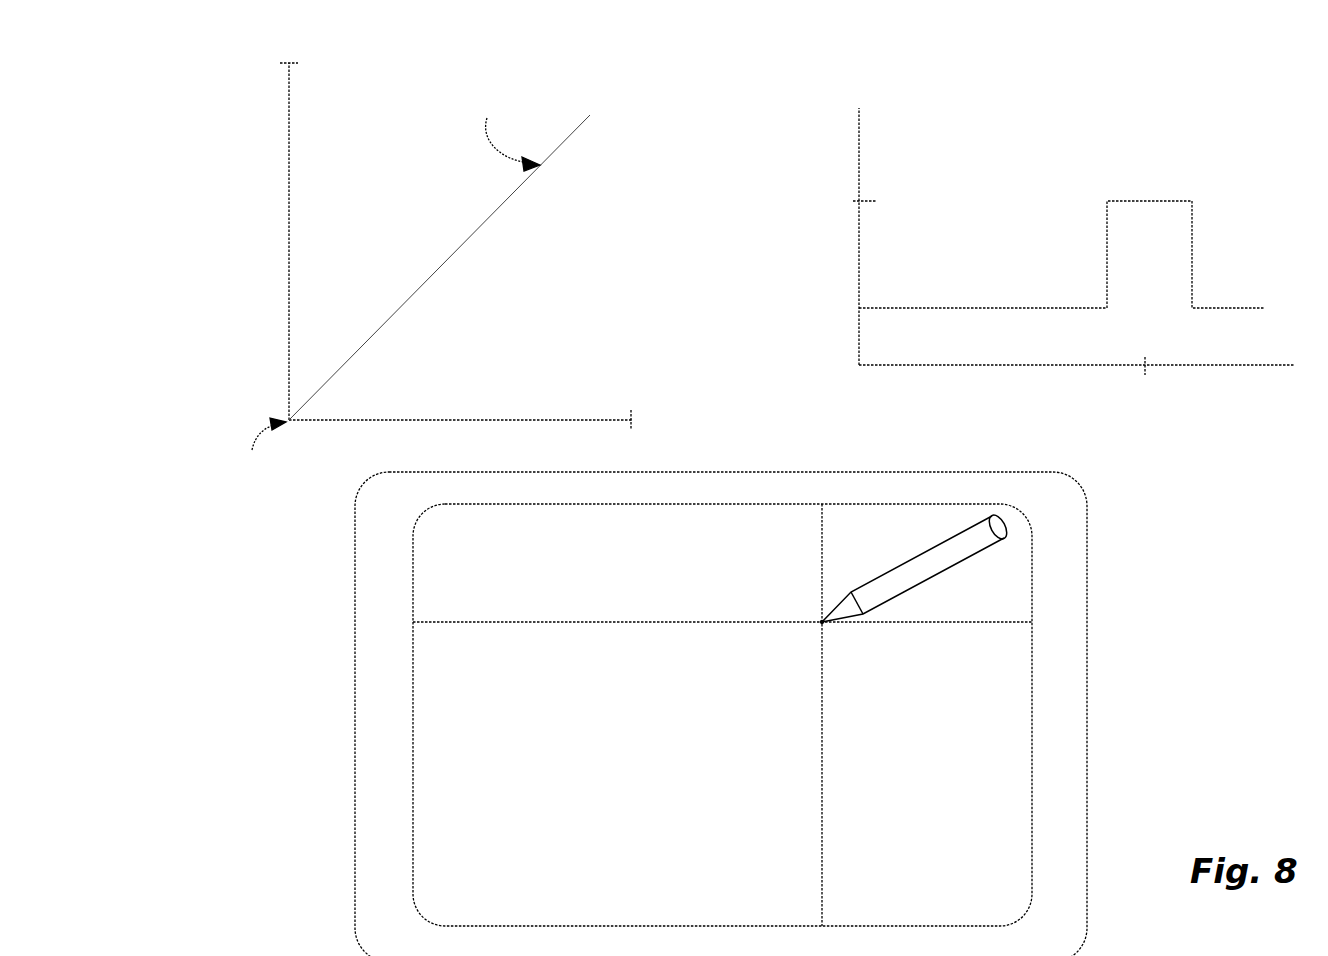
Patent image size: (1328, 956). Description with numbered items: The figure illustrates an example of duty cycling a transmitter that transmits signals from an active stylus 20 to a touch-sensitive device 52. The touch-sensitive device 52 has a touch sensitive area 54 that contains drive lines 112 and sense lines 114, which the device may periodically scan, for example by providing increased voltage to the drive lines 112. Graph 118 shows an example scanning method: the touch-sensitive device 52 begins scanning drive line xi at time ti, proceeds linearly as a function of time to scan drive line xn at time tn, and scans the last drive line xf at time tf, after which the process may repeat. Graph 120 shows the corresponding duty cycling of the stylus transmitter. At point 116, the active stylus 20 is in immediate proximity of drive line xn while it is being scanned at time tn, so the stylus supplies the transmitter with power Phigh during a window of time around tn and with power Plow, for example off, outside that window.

The active stylus 20 is at (1018, 510).
The touch-sensitive device 52 is at (370, 705).
The touch sensitive area 54 is at (518, 851).
The drive lines 112 is at (805, 771).
The sense lines 114 is at (497, 609).
The point 116 is at (810, 608).
The graph 118 is at (438, 258).
The graph 120 is at (1046, 241).